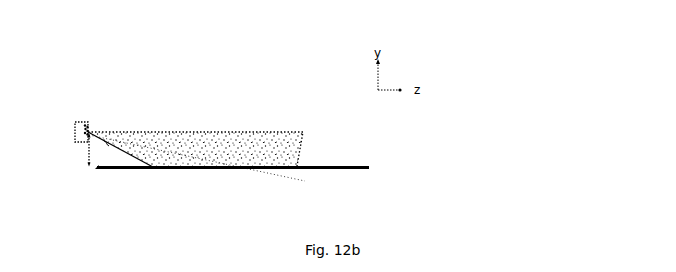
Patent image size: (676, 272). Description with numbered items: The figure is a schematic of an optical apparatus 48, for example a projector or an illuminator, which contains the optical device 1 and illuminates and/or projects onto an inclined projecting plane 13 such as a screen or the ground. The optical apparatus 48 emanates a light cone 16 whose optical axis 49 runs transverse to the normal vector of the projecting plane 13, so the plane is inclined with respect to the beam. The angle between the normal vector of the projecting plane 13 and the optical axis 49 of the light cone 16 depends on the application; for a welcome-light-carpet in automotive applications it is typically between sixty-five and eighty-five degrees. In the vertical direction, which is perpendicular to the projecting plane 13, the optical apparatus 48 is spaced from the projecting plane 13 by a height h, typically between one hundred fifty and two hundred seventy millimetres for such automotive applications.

The optical device 1 is at (88, 122).
The projecting plane 13 is at (342, 164).
The light cone 16 is at (261, 131).
The optical apparatus 48 is at (73, 120).
The optical axis 49 is at (163, 142).
The height h is at (87, 152).